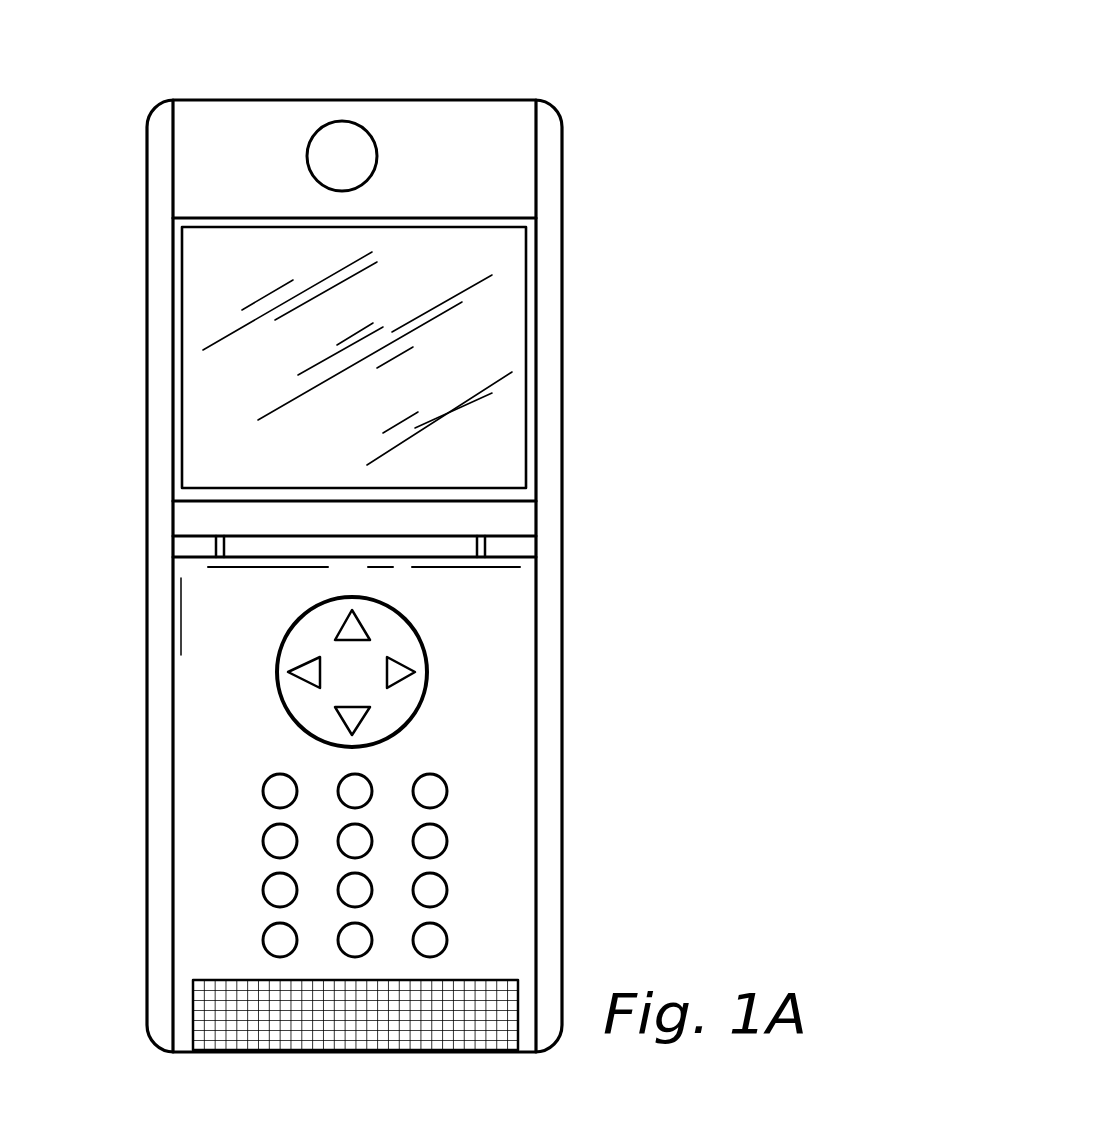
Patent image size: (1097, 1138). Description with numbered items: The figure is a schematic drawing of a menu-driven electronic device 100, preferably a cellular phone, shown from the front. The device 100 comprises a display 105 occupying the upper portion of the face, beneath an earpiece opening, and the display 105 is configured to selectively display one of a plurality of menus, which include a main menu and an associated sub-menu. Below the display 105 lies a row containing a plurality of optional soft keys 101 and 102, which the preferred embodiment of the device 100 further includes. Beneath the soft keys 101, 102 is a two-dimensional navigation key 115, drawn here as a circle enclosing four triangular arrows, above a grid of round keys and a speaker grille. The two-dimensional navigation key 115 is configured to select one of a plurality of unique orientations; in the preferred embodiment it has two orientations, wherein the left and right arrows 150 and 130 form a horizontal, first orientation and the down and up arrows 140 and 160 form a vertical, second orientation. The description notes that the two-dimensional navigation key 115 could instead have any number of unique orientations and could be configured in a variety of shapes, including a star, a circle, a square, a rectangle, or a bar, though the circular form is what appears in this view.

The menu-driven electronic device 100 is at (598, 93).
The display 105 is at (193, 298).
The soft key 101 is at (198, 543).
The soft key 102 is at (505, 544).
The two-dimensional navigation key 115 is at (388, 712).
The vertical orientation 160 is at (348, 627).
The horizontal orientation 150 is at (312, 668).
The horizontal orientation 130 is at (398, 675).
The vertical orientation 140 is at (347, 714).